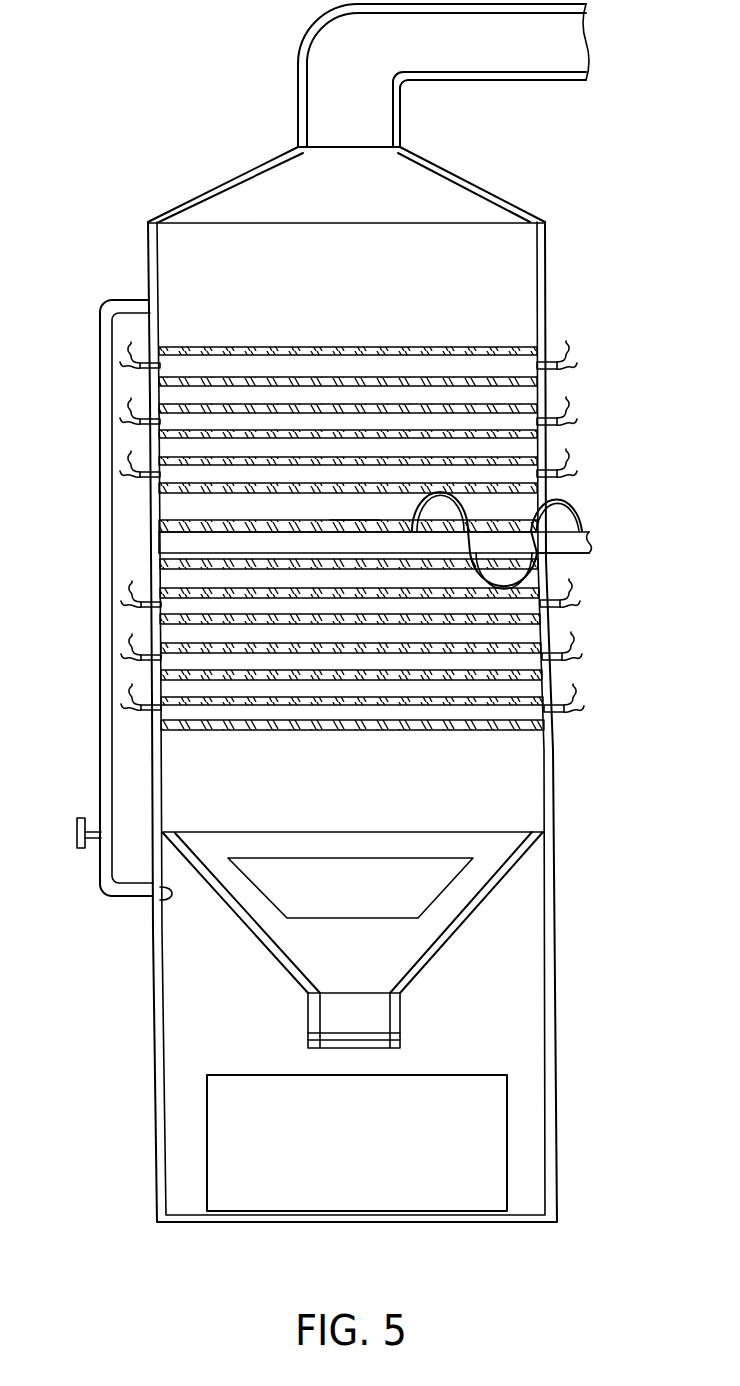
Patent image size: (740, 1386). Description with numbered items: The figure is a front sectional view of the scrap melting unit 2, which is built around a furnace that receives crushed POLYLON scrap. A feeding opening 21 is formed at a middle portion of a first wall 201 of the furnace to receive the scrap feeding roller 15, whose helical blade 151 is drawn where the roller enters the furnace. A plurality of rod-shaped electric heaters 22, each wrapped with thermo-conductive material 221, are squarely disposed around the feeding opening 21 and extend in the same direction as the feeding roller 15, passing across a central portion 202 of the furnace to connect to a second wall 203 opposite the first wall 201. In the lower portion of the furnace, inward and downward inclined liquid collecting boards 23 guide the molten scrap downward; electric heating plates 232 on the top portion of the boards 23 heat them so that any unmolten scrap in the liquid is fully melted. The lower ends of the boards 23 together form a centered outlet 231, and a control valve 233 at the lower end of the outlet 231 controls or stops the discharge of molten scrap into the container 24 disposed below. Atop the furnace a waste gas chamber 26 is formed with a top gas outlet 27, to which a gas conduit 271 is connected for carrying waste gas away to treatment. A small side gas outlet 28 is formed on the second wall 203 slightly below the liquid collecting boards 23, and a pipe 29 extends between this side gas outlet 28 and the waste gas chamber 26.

The scrap melting unit 2 is at (566, 786).
The scrap feeding roller 15 is at (337, 528).
The screw blade 151 is at (558, 507).
The feeding opening 21 is at (553, 555).
The first wall 201 is at (550, 568).
The central portion 202 is at (352, 510).
The second wall 203 is at (153, 547).
The rod-shaped electric heaters 22 is at (378, 510).
The thermo-conductive material 221 is at (508, 348).
The liquid collecting boards 23 is at (352, 940).
The outlet 231 is at (327, 1017).
The electric heating plates 232 is at (438, 893).
The control valve 233 is at (400, 1035).
The container 24 is at (465, 1090).
The waste gas chamber 26 is at (498, 258).
The top gas outlet 27 is at (320, 147).
The gas conduit 271 is at (456, 56).
The side gas outlet 28 is at (167, 903).
The pipe 29 is at (102, 553).